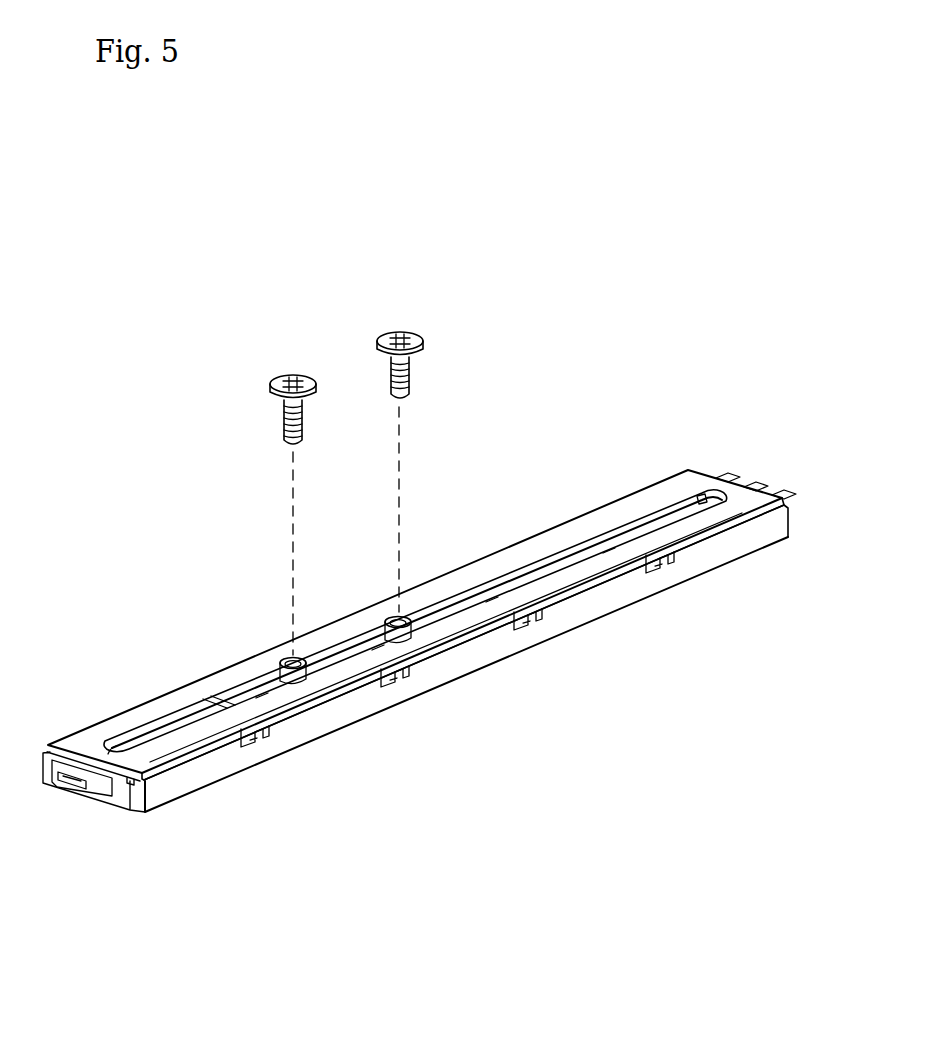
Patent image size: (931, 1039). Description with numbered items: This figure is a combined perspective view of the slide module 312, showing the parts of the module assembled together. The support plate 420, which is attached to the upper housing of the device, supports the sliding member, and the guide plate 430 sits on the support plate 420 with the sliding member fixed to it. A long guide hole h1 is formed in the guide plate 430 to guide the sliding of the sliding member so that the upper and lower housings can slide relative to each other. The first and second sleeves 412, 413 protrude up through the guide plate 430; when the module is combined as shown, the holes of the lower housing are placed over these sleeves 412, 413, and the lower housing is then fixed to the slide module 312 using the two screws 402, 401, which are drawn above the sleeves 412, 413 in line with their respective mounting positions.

The slide module 312 is at (652, 309).
The guide plate 430 is at (703, 477).
The support plate 420 is at (190, 786).
The guide hole h1 is at (600, 547).
The screw 401 is at (293, 373).
The screw 402 is at (400, 330).
The first sleeve 412 is at (407, 633).
The second sleeve 413 is at (298, 678).